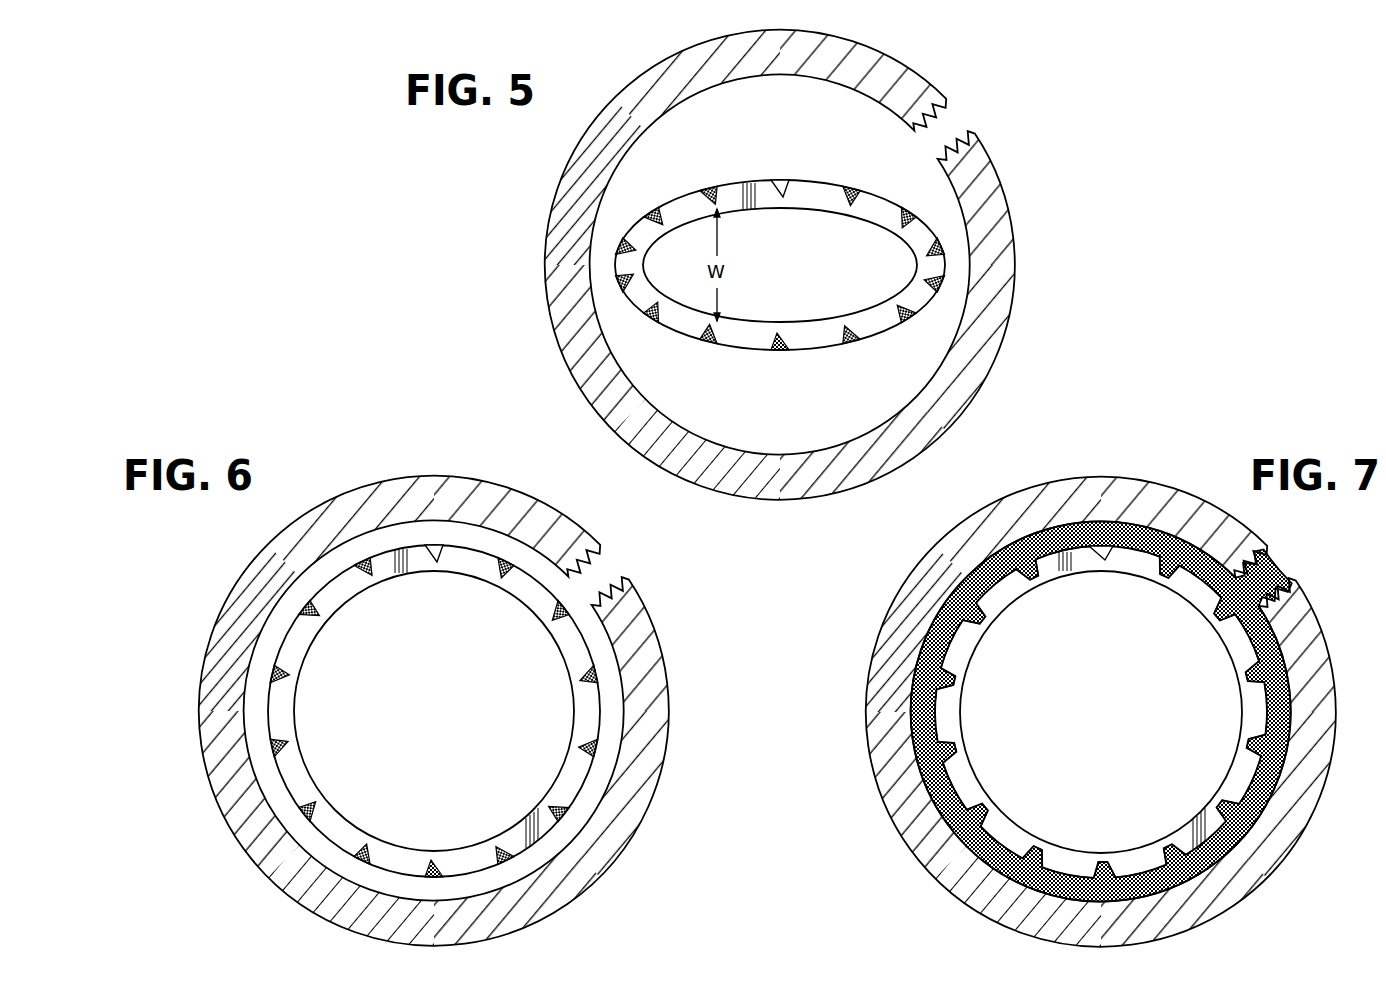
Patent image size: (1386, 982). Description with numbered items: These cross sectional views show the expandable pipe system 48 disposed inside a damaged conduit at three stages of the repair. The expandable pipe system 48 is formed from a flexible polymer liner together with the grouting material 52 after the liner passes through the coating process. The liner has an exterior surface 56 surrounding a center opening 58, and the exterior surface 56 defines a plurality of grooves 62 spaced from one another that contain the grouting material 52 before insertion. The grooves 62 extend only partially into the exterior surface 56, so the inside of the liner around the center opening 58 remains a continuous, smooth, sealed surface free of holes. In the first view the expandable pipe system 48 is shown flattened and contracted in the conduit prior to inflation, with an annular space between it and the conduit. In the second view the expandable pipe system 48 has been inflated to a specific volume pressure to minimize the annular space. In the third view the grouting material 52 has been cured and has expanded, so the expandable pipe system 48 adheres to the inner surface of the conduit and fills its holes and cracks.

In FIG. 5, the expandable pipe system 48 is at (743, 174).
In FIG. 6, the expandable pipe system 48 is at (380, 543).
In FIG. 7, the expandable pipe system 48 is at (1148, 540).
In FIG. 5, the grouting material 52 is at (853, 190).
In FIG. 6, the grouting material 52 is at (282, 673).
In FIG. 7, the grouting material 52 is at (1258, 622).
In FIG. 5, the exterior surface 56 is at (690, 193).
In FIG. 6, the exterior surface 56 is at (331, 578).
In FIG. 7, the exterior surface 56 is at (990, 562).
In FIG. 5, the center opening 58 is at (794, 276).
In FIG. 6, the center opening 58 is at (444, 720).
In FIG. 7, the center opening 58 is at (1112, 720).
In FIG. 5, the grooves 62 is at (858, 332).
In FIG. 6, the grooves 62 is at (569, 620).
In FIG. 7, the grooves 62 is at (1145, 562).